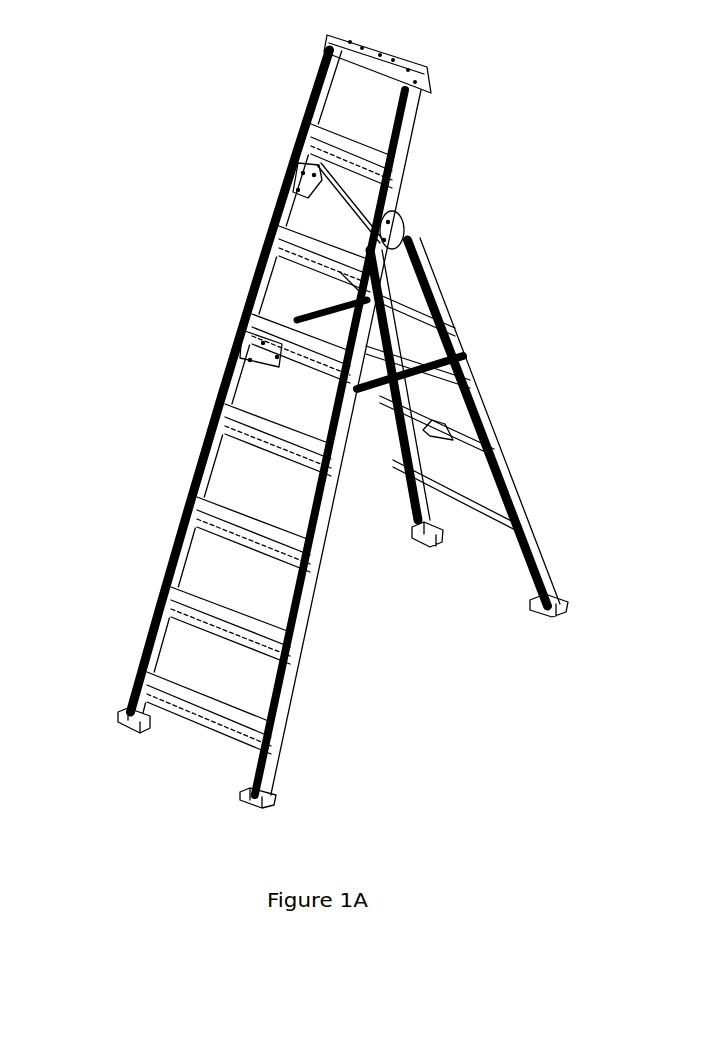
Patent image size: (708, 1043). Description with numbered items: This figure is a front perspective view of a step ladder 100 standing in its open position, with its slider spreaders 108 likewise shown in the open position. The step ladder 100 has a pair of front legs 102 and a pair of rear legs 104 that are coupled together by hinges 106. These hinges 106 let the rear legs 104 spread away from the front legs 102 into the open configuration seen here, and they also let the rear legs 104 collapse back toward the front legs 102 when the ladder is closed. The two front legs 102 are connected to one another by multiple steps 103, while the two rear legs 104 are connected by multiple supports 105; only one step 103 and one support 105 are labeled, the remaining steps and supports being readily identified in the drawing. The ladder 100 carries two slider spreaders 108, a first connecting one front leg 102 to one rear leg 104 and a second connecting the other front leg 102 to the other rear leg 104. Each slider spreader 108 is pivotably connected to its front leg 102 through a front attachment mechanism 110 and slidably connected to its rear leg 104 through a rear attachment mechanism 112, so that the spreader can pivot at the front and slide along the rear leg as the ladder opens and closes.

The step ladder 100 is at (131, 42).
The front legs 102 is at (307, 593).
The step 103 is at (198, 705).
The rear legs 104 is at (537, 572).
The support 105 is at (452, 500).
The hinges 106 is at (305, 180).
The slider spreader 108 is at (313, 307).
The front attachment mechanism 110 is at (245, 357).
The rear attachment mechanism 112 is at (460, 360).